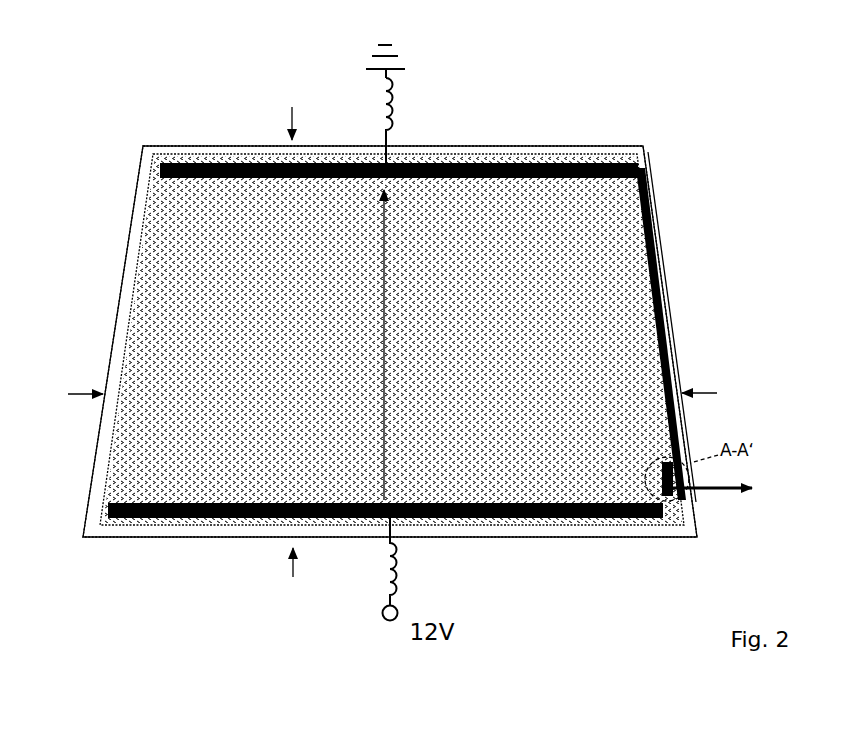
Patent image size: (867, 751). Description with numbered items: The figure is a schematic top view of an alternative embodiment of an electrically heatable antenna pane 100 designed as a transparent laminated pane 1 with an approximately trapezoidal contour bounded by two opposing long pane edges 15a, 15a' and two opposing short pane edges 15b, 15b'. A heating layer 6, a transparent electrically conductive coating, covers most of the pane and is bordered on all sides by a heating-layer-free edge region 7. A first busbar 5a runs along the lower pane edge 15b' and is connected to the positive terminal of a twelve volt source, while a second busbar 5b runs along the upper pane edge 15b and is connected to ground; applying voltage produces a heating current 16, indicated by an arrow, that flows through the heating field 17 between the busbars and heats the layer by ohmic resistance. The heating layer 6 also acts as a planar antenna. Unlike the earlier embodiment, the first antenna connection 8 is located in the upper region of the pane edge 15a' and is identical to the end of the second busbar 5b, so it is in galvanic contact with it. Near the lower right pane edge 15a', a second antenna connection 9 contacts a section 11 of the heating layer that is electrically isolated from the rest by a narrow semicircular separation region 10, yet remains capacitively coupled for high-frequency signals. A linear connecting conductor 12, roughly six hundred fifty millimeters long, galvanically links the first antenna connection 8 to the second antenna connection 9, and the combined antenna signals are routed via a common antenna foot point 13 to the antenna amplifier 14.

The antenna pane 100 is at (98, 80).
The laminated pane 1 is at (137, 183).
The first busbar 5a is at (196, 517).
The second busbar 5b is at (226, 166).
The heating layer 6 is at (175, 325).
The heating-layer-free edge region 7 is at (120, 357).
The first antenna connection 8 is at (622, 163).
The second antenna connection 9 is at (687, 497).
The separation region 10 is at (673, 500).
The section 11 is at (645, 508).
The connecting conductor 12 is at (654, 243).
The antenna foot point 13 is at (688, 490).
The antenna amplifier 14 is at (733, 489).
The long pane edge 15a is at (62, 393).
The long pane edge 15a' is at (723, 391).
The upper pane edge 15b is at (292, 109).
The lower pane edge 15b' is at (295, 575).
The heating current 16 is at (385, 245).
The heating field 17 is at (458, 250).